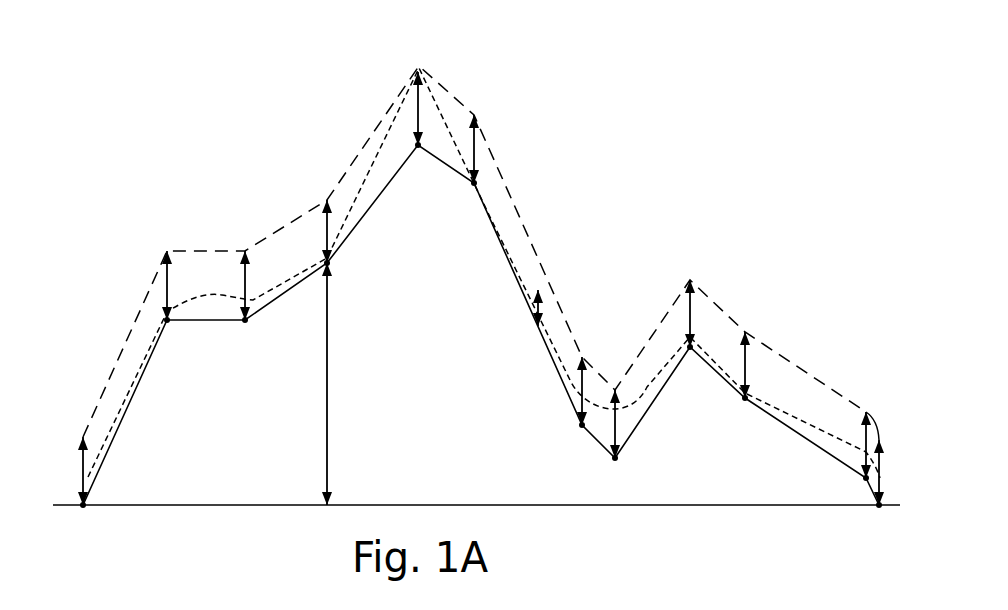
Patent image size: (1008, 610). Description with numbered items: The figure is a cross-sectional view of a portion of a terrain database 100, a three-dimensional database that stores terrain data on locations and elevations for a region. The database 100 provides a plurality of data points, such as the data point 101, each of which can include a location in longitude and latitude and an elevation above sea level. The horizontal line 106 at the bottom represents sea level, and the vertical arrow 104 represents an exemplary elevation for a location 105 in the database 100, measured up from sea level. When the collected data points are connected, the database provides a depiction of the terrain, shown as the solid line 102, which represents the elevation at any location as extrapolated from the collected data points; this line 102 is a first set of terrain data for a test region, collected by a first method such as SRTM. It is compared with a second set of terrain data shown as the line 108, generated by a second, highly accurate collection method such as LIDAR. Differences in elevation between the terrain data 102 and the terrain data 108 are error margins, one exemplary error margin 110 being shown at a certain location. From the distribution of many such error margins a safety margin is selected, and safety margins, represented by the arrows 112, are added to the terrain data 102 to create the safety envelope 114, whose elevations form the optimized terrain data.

The terrain database 100 is at (217, 118).
The data point 101 is at (169, 323).
The line representing terrain data 102 is at (145, 373).
The arrow representing elevation 104 is at (328, 463).
The location 105 is at (330, 268).
The line representing sea level 106 is at (280, 507).
The line representing second terrain data 108 is at (368, 172).
The error margin 110 is at (540, 305).
The safety margin arrows 112 is at (325, 223).
The safety envelope 114 is at (155, 275).